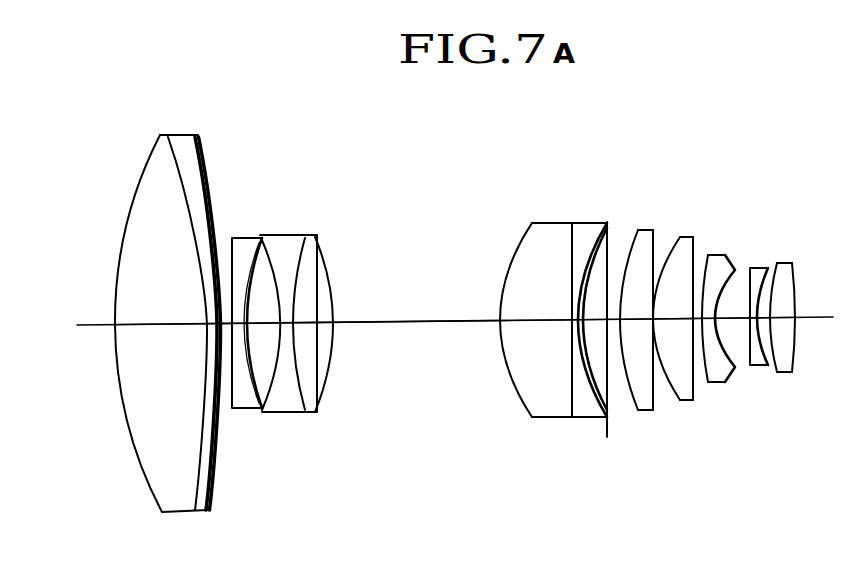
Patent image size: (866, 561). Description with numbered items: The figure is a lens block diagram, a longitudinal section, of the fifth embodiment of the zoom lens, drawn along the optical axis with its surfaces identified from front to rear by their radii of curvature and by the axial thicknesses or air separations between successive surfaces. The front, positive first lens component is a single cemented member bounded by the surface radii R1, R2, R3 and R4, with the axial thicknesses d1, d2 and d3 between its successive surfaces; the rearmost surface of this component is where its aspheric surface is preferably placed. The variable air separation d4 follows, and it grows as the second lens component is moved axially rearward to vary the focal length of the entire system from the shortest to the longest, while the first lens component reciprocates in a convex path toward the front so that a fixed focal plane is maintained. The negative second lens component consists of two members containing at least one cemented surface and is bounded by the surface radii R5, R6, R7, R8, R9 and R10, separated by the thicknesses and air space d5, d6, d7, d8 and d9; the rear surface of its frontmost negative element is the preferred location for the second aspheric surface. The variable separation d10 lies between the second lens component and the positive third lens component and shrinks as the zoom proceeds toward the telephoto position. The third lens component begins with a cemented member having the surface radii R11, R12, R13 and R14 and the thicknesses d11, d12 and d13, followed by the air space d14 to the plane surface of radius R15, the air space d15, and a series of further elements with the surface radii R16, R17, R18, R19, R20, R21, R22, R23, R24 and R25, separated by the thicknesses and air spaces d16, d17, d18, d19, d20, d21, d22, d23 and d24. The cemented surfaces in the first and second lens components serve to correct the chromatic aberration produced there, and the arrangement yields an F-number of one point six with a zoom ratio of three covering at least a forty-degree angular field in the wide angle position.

The radius of curvature of first surface R1 is at (142, 178).
The radius of curvature of second surface R2 is at (167, 140).
The radius of curvature of third surface R3 is at (193, 148).
The radius of curvature of fourth surface R4 is at (207, 157).
The radius of curvature of fifth surface R5 is at (232, 244).
The radius of curvature of sixth surface R6 is at (262, 248).
The radius of curvature of seventh surface R7 is at (266, 258).
The radius of curvature of eighth surface R8 is at (299, 257).
The radius of curvature of ninth surface R9 is at (311, 254).
The radius of curvature of tenth surface R10 is at (323, 253).
The radius of curvature of eleventh surface R11 is at (510, 257).
The radius of curvature of twelfth surface R12 is at (572, 250).
The radius of curvature of thirteenth surface R13 is at (596, 243).
The radius of curvature of fourteenth surface R14 is at (604, 240).
The radius of curvature of fifteenth surface R15 is at (607, 222).
The radius of curvature of sixteenth surface R16 is at (630, 250).
The radius of curvature of seventeenth surface R17 is at (653, 232).
The radius of curvature of eighteenth surface R18 is at (674, 243).
The radius of curvature of nineteenth surface R19 is at (693, 237).
The radius of curvature of twentieth surface R20 is at (708, 258).
The radius of curvature of twenty-first surface R21 is at (731, 268).
The radius of curvature of twenty-second surface R22 is at (752, 268).
The radius of curvature of twenty-third surface R23 is at (767, 270).
The radius of curvature of twenty-fourth surface R24 is at (783, 265).
The radius of curvature of twenty-fifth surface R25 is at (794, 267).
The axial thickness between first and second surfaces d1 is at (133, 327).
The axial thickness between second and third surfaces d2 is at (216, 325).
The axial thickness between third and fourth surfaces d3 is at (217, 330).
The variable air separation between fourth and fifth surfaces d4 is at (226, 287).
The axial thickness between fifth and sixth surfaces d5 is at (232, 287).
The axial thickness between sixth and seventh surfaces d6 is at (248, 325).
The axial air separation between seventh and eighth surfaces d7 is at (263, 327).
The axial thickness between eighth and ninth surfaces d8 is at (288, 328).
The axial thickness between ninth and tenth surfaces d9 is at (307, 328).
The variable air separation between tenth and eleventh surfaces d10 is at (373, 327).
The axial thickness between eleventh and twelfth surfaces d11 is at (522, 322).
The axial thickness between twelfth and thirteenth surfaces d12 is at (577, 320).
The axial thickness between thirteenth and fourteenth surfaces d13 is at (578, 322).
The axial air separation between fourteenth and fifteenth surfaces d14 is at (595, 318).
The axial air separation between fifteenth and sixteenth surfaces d15 is at (607, 322).
The axial thickness between sixteenth and seventeenth surfaces d16 is at (633, 322).
The axial air separation between seventeenth and eighteenth surfaces d17 is at (655, 315).
The axial thickness between eighteenth and nineteenth surfaces d18 is at (672, 322).
The axial air separation between nineteenth and twentieth surfaces d19 is at (702, 323).
The axial thickness between twentieth and twenty-first surfaces d20 is at (710, 325).
The axial air separation between twenty-first and twenty-second surfaces d21 is at (740, 325).
The axial thickness between twenty-second and twenty-third surfaces d22 is at (755, 325).
The axial air separation between twenty-third and twenty-fourth surfaces d23 is at (778, 325).
The axial thickness between twenty-fourth and twenty-fifth surfaces d24 is at (785, 323).